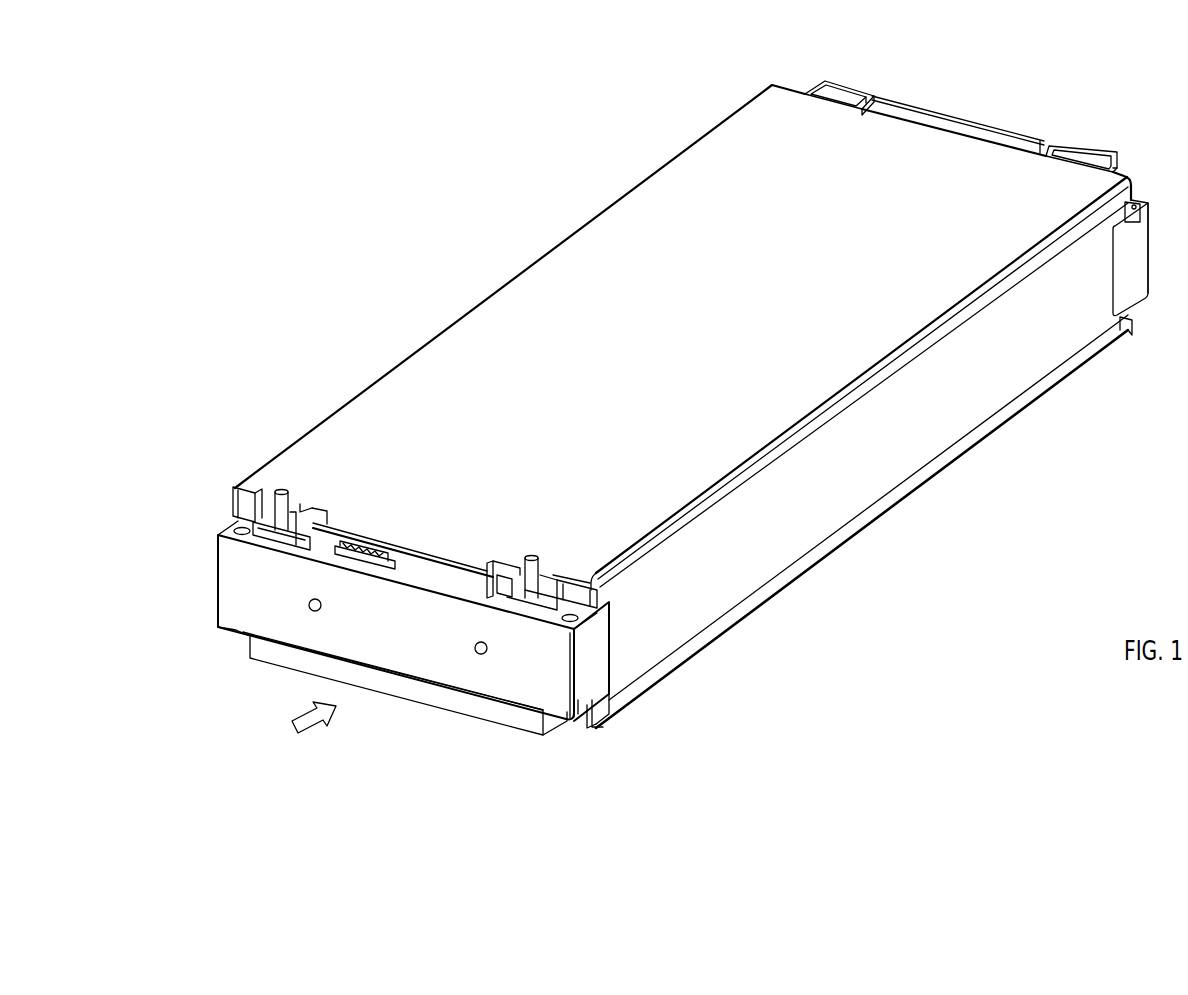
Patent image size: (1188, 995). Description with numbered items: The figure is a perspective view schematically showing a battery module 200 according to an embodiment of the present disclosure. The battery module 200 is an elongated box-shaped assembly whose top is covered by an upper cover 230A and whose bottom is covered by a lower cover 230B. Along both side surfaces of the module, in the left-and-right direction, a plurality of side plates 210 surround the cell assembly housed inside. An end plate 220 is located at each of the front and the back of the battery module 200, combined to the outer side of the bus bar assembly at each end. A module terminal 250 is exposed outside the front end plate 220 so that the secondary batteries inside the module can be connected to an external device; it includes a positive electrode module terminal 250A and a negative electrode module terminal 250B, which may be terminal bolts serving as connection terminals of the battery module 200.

The battery module 200 is at (293, 138).
The side plate 210 is at (381, 360).
The end plate 220 is at (1047, 140).
The upper cover 230A is at (556, 328).
The lower cover 230B is at (642, 694).
The module terminal 250 is at (180, 367).
The positive electrode module terminal 250A is at (283, 492).
The negative electrode module terminal 250B is at (530, 553).